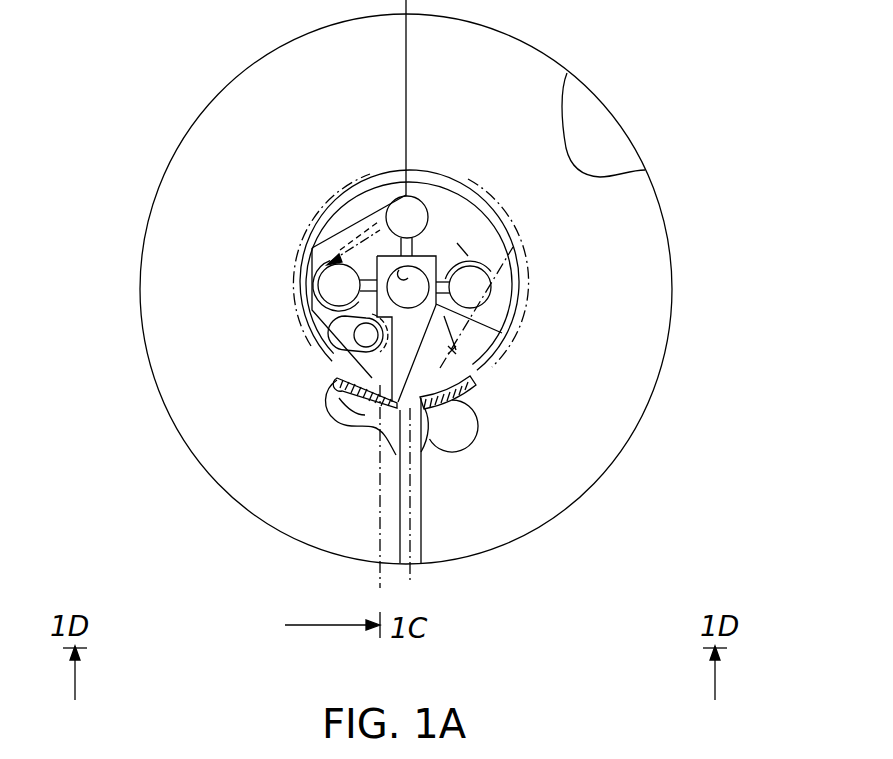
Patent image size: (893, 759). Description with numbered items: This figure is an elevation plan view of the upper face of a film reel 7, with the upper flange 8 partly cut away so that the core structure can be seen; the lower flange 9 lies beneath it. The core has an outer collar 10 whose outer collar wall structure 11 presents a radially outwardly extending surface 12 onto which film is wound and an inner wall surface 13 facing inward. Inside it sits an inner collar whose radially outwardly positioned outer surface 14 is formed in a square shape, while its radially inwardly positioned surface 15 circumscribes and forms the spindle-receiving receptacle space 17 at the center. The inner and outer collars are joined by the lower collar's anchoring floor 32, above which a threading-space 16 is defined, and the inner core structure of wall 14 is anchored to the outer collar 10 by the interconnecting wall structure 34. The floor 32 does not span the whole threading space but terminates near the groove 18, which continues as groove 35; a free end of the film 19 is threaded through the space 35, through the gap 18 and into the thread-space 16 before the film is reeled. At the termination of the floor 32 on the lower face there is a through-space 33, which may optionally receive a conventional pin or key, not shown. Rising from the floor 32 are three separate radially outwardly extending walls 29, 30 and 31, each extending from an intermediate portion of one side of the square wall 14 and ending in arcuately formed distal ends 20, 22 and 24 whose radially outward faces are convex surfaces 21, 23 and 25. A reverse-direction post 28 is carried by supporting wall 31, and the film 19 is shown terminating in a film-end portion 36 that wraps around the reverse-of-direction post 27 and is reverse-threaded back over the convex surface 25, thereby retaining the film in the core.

The reel 7 is at (168, 68).
The upper flange 8 is at (660, 293).
The lower flange 9 is at (628, 153).
The outer collar 10 is at (457, 410).
The outer collar wall structure 11 is at (436, 418).
The radially outwardly extending surface 12 is at (375, 423).
The inner wall surface 13 is at (366, 386).
The inner collar radially outwardly positioned outer surface 14 is at (478, 231).
The radially inwardly positioned surface 15 is at (418, 273).
The threading-space 16 is at (488, 340).
The spindle-receiving receptacle space 17 is at (407, 290).
The groove 18 is at (396, 419).
The film 19 is at (411, 514).
The distal end 20 is at (476, 298).
The convex surface 21 is at (488, 283).
The distal end 22 is at (406, 195).
The convex surface 23 is at (407, 194).
The distal end 24 is at (340, 287).
The convex surface 25 is at (316, 272).
The reverse-of-direction post 27 is at (365, 338).
The reverse-direction post 28 is at (338, 325).
The radially outwardly extending wall 29 is at (472, 257).
The radially outwardly extending wall 30 is at (408, 216).
The radially outwardly extending wall 31 is at (326, 301).
The anchoring floor 32 is at (425, 240).
The through-space 33 is at (474, 309).
The interconnecting wall structure 34 is at (410, 334).
The groove 35 is at (421, 549).
The film-end portion 36 is at (348, 372).